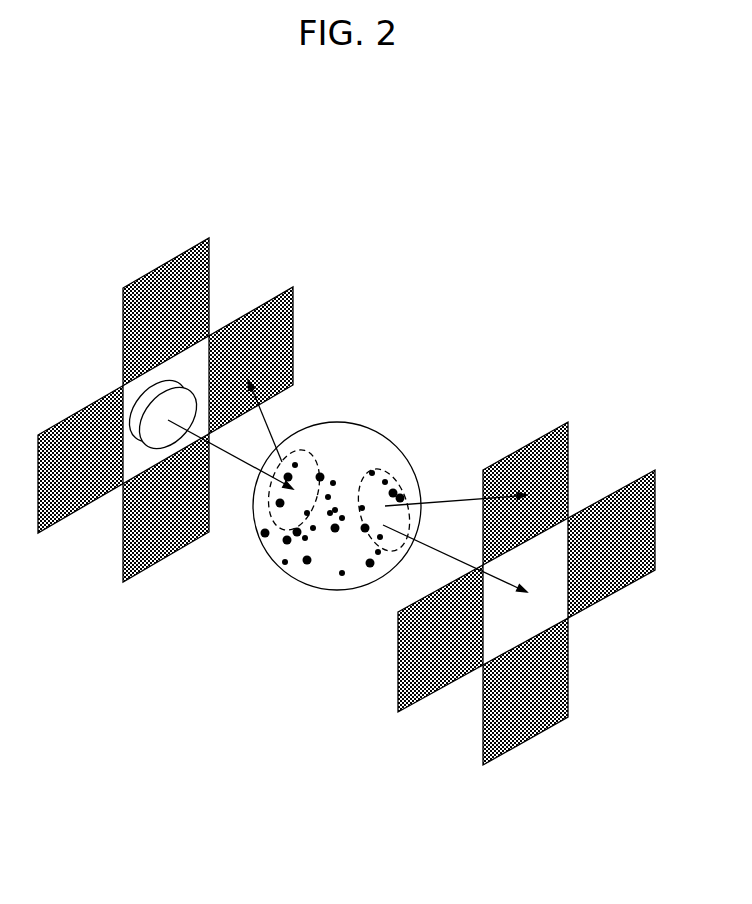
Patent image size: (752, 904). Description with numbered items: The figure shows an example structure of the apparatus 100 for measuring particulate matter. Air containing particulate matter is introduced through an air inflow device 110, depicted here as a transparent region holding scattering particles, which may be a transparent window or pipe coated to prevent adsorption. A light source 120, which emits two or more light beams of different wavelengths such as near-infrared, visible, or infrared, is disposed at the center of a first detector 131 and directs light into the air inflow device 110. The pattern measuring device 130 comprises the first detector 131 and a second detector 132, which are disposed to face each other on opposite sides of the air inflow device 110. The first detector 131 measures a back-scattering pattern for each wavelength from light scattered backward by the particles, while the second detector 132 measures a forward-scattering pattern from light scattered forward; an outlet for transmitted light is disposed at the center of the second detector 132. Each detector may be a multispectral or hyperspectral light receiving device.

The apparatus for measuring particulate matter 100 is at (462, 308).
The air inflow device 110 is at (382, 436).
The light source 120 is at (138, 402).
The pattern measuring device 130 is at (346, 511).
The first detector 131 is at (165, 562).
The second detector 132 is at (492, 593).